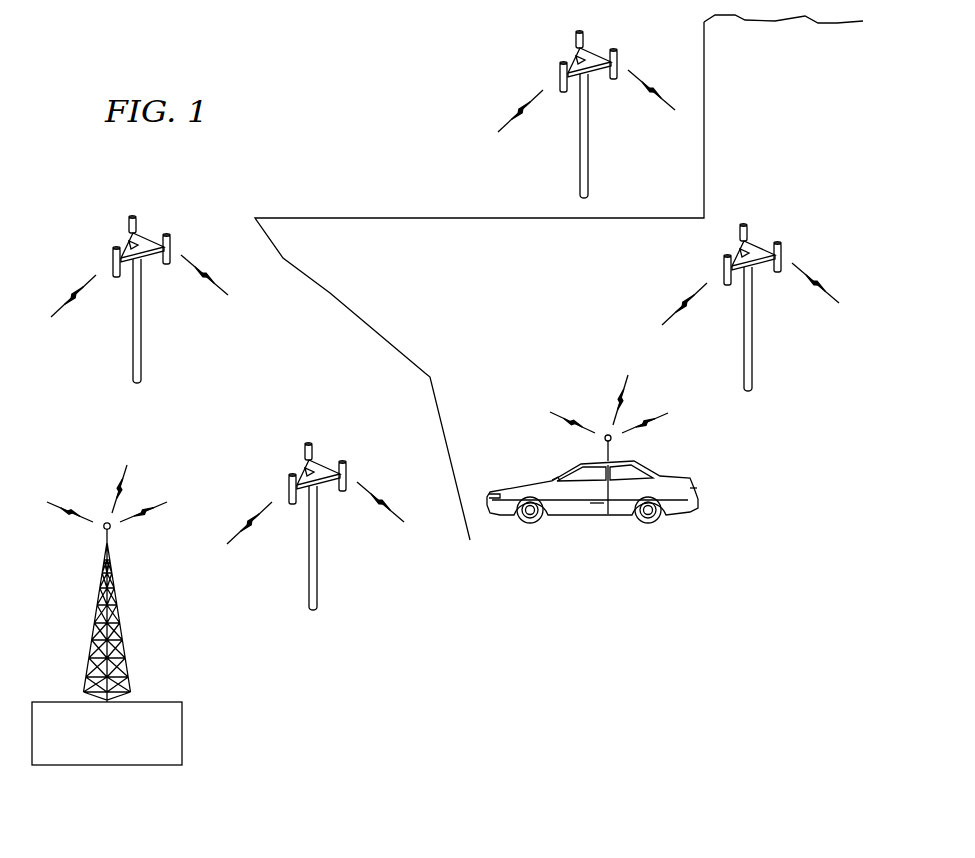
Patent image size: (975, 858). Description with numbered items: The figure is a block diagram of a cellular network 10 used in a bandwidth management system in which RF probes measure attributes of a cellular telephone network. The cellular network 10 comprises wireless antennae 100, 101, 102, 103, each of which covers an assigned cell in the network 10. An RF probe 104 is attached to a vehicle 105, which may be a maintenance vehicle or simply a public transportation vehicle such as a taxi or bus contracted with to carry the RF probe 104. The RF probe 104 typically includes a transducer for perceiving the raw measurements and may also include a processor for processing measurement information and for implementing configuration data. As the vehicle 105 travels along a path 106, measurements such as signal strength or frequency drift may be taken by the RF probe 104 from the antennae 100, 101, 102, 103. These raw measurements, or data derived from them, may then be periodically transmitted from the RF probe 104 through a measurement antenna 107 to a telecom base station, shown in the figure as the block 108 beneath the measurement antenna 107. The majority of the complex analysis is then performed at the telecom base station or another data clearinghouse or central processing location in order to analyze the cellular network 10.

The cellular network 10 is at (342, 84).
The wireless antenna 100 is at (318, 548).
The wireless antenna 101 is at (132, 326).
The wireless antenna 102 is at (589, 138).
The wireless antenna 103 is at (753, 330).
The RF probe 104 is at (612, 448).
The vehicle 105 is at (524, 480).
The path 106 is at (385, 217).
The measurement antenna 107 is at (90, 640).
The broadcast station 108 is at (125, 744).